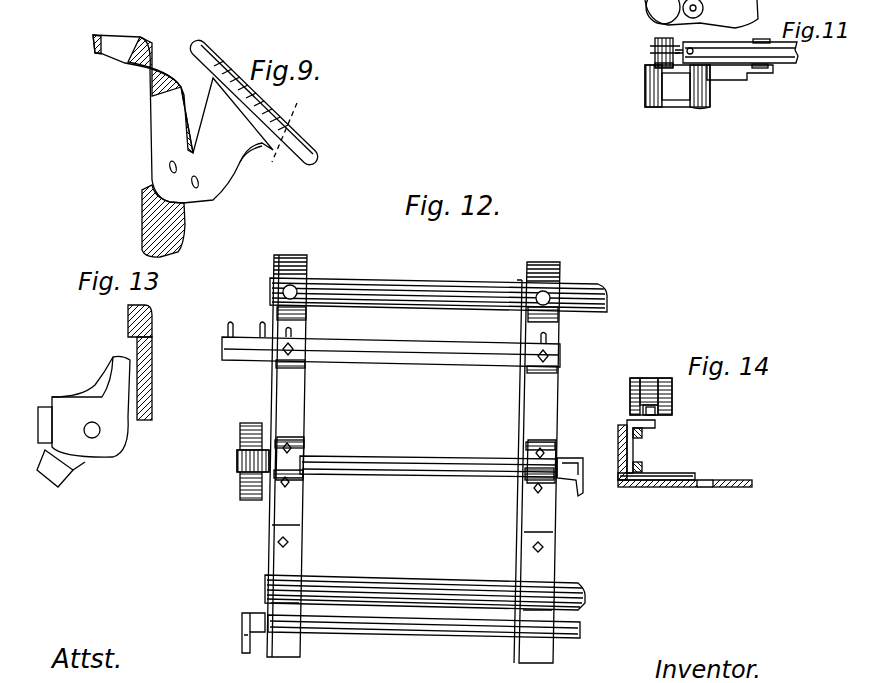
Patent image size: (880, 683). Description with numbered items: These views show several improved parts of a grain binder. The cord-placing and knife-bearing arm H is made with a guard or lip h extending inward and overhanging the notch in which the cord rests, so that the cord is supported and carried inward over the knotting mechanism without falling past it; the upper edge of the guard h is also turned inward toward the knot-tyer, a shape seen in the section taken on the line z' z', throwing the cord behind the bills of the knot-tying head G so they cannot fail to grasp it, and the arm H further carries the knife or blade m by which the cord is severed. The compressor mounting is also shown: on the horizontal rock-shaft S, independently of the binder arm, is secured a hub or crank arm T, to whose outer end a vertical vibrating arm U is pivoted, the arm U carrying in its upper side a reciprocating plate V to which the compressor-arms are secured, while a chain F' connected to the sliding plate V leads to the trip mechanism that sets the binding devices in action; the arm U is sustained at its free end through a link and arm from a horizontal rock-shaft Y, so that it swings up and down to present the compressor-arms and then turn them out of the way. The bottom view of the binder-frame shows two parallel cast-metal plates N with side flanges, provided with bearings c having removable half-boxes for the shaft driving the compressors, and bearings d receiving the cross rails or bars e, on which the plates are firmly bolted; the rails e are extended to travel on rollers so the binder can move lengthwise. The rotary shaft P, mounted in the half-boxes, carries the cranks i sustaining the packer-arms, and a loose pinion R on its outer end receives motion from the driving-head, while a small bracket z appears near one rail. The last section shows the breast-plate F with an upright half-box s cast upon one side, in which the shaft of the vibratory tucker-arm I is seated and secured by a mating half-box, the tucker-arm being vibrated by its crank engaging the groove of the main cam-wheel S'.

In FIG. 9, the cord-placing and knife-bearing arm H is at (174, 125).
In FIG. 13, the cord-placing and knife-bearing arm H is at (178, 385).
In FIG. 9, the guard or lip h is at (253, 102).
In FIG. 13, the guard or lip h is at (129, 321).
In FIG. 9, the knife or blade m is at (142, 216).
In FIG. 9, the section line z' is at (286, 130).
In FIG. 11, the vertical vibrating arm U is at (709, 45).
In FIG. 11, the reciprocating plate V is at (736, 51).
In FIG. 11, the horizontal rock-shaft S is at (651, 45).
In FIG. 11, the chain F' is at (645, 62).
In FIG. 11, the hub or crank arm T is at (677, 87).
In FIG. 13, the rotary knot-tying head G is at (83, 421).
In FIG. 12, the parallel cast-metal bars or plates N is at (413, 459).
In FIG. 12, the cross rails or bars e is at (436, 444).
In FIG. 12, the bearings d is at (307, 312).
In FIG. 12, the rotary shaft P is at (398, 456).
In FIG. 12, the loose pinion R is at (240, 455).
In FIG. 12, the bearings c is at (289, 463).
In FIG. 12, the cranks i is at (574, 482).
In FIG. 12, the horizontal rock-shaft Y is at (396, 653).
In FIG. 12, the angle bracket z is at (242, 633).
In FIG. 14, the main cam-wheel S' is at (651, 387).
In FIG. 14, the upright half-box s is at (630, 450).
In FIG. 14, the vibratory tucker-arm I is at (688, 471).
In FIG. 14, the breast-plate or shield F is at (685, 470).